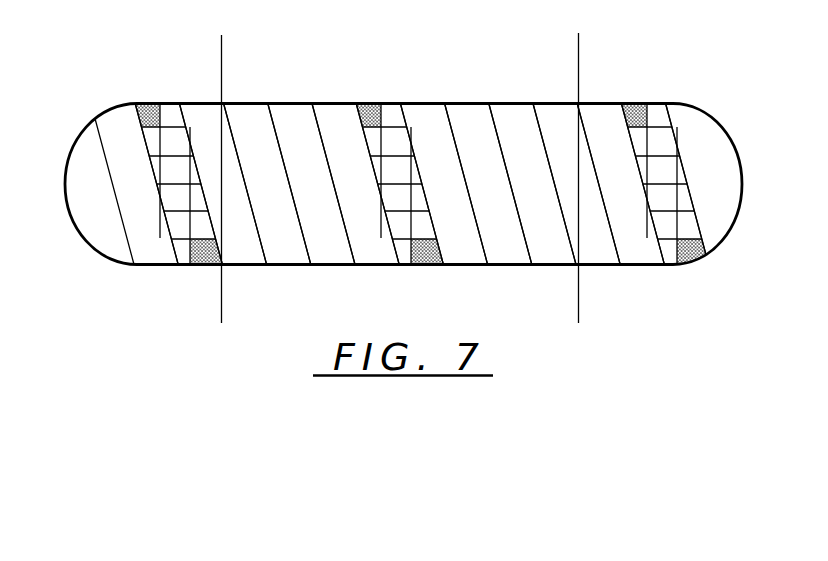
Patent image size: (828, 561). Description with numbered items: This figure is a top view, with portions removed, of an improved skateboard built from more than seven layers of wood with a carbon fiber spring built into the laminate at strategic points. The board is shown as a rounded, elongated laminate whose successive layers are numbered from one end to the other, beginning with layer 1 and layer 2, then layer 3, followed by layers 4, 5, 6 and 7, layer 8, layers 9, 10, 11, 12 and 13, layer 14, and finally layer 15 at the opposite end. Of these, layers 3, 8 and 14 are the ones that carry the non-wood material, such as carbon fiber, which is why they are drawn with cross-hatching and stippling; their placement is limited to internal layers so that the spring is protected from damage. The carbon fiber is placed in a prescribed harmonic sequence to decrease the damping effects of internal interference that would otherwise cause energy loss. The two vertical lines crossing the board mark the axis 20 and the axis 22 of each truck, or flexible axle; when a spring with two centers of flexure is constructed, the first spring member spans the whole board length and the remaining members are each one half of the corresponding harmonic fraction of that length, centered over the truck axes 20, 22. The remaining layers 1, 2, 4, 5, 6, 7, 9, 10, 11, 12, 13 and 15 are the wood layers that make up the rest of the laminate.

The capsule-shaped dosage form body 1 is at (85, 142).
The first segment 2 is at (108, 127).
The layer 3 is at (172, 118).
The second segment 4 is at (198, 118).
The third segment 5 is at (250, 133).
The fourth segment 6 is at (293, 122).
The fifth segment 7 is at (338, 130).
The layer 8 is at (395, 115).
The sixth segment 9 is at (427, 127).
The seventh segment 10 is at (477, 118).
The eighth segment 11 is at (512, 130).
The ninth segment 12 is at (558, 120).
The tenth segment 13 is at (600, 123).
The layer 14 is at (660, 115).
The eleventh segment 15 is at (693, 130).
The axis of truck 20 is at (222, 42).
The axis of truck 22 is at (579, 43).